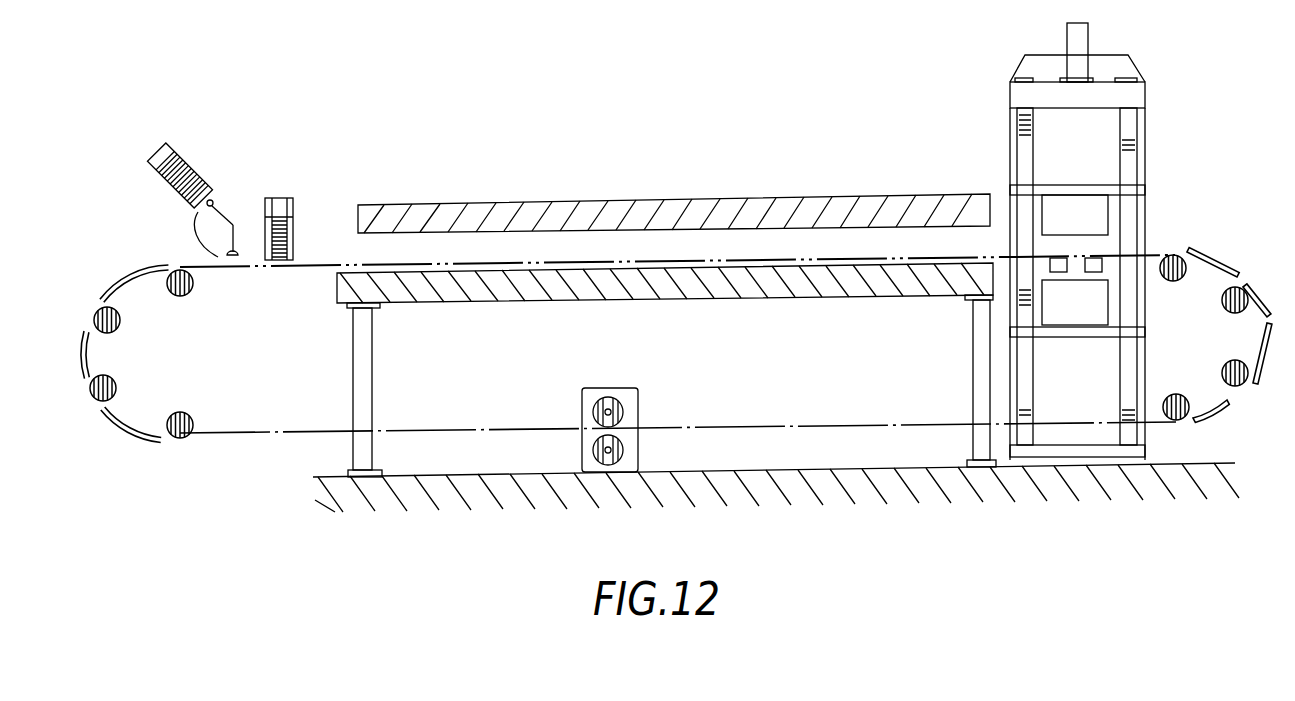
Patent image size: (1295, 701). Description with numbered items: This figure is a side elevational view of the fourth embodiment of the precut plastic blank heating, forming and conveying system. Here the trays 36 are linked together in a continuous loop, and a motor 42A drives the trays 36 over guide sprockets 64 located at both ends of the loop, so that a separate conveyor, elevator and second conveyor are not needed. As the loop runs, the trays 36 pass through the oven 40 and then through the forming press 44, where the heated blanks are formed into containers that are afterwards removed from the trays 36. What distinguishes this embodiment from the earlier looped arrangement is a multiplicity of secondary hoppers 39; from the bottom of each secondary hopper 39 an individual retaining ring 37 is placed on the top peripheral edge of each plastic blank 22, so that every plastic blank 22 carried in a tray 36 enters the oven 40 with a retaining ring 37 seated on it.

The plastic blank 22 is at (243, 263).
The tray 36 is at (186, 265).
The retaining ring 37 is at (280, 198).
The secondary hopper 39 is at (258, 212).
The oven 40 is at (421, 203).
The motor 42A is at (592, 406).
The forming press 44 is at (1010, 152).
The guide sprocket 64 is at (173, 415).